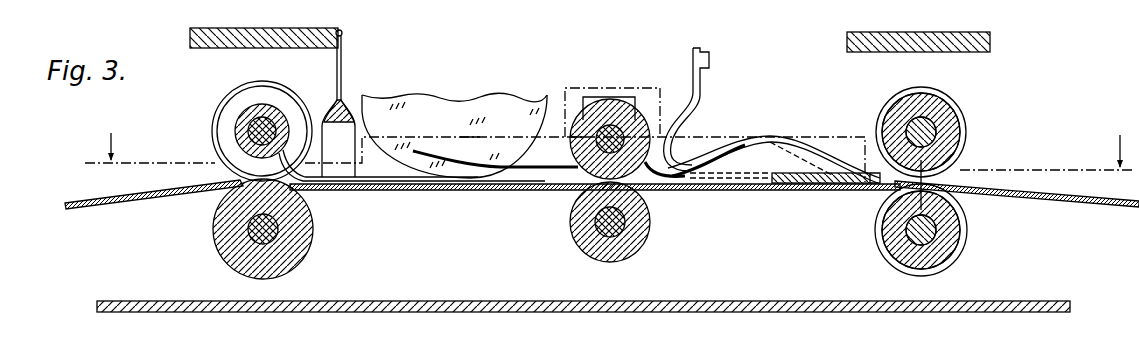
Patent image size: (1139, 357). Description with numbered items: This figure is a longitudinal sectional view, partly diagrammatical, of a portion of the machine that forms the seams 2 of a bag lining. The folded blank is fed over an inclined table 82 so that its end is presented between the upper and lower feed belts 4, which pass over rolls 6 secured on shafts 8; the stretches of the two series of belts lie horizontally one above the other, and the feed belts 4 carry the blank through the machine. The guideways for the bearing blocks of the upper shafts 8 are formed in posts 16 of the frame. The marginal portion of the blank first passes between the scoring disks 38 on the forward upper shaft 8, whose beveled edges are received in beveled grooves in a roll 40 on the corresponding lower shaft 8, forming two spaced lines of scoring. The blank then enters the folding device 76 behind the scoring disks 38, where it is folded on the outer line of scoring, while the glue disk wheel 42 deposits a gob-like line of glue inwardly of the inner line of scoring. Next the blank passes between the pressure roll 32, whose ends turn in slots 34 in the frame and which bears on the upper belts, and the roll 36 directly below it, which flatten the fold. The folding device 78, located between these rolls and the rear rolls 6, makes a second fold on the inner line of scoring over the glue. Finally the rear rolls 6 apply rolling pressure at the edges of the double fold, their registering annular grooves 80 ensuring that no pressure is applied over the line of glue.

The seam 2 is at (1068, 193).
The feed belt 4 is at (610, 163).
The roll 6 is at (878, 113).
The shaft 8 is at (268, 120).
The post 16 is at (190, 40).
The pressure roll 32 is at (642, 112).
The slot 34 is at (597, 100).
The roll 36 is at (649, 238).
The scoring disk 38 is at (220, 97).
The roll 40 is at (228, 248).
The disk wheel 42 is at (507, 98).
The folding device 76 is at (539, 184).
The folding device 78 is at (800, 136).
The annular groove 80 is at (966, 129).
The inclined table 82 is at (138, 207).